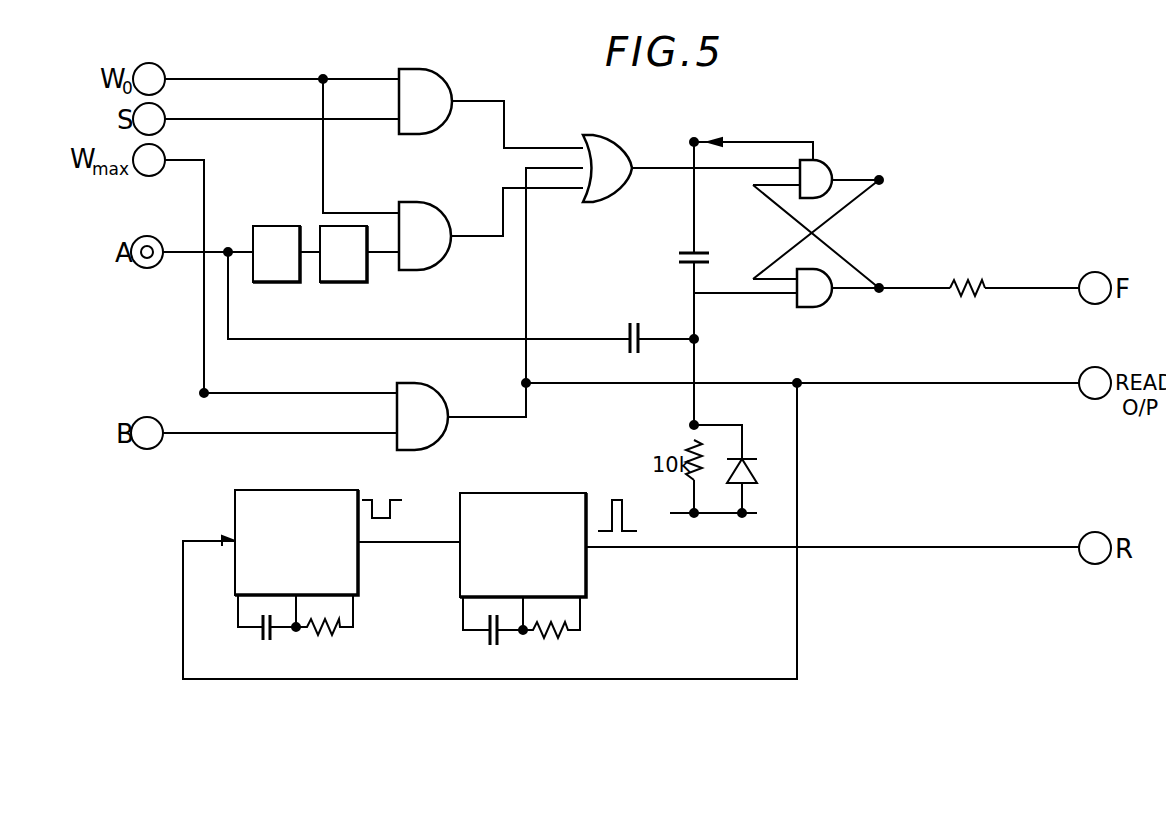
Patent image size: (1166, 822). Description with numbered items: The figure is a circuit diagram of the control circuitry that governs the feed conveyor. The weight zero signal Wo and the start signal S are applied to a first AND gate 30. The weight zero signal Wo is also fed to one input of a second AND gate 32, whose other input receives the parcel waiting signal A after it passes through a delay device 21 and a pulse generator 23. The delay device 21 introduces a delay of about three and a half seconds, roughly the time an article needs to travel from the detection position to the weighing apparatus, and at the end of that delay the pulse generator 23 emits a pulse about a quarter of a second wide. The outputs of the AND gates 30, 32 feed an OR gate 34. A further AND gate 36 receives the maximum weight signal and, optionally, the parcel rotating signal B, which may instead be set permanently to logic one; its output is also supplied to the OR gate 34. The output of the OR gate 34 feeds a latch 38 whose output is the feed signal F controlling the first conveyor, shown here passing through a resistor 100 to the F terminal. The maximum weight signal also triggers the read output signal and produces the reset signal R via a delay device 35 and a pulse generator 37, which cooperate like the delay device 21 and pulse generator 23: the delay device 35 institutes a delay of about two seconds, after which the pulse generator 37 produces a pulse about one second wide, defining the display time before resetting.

The delay device 21 is at (295, 282).
The pulse generator 23 is at (358, 282).
The first AND gate 30 is at (421, 72).
The second AND gate 32 is at (417, 207).
The OR gate 34 is at (603, 140).
The delay device 35 is at (235, 490).
The further AND gate 36 is at (416, 388).
The pulse generator 37 is at (460, 492).
The latch 38 is at (832, 158).
The resistor 100 is at (972, 276).